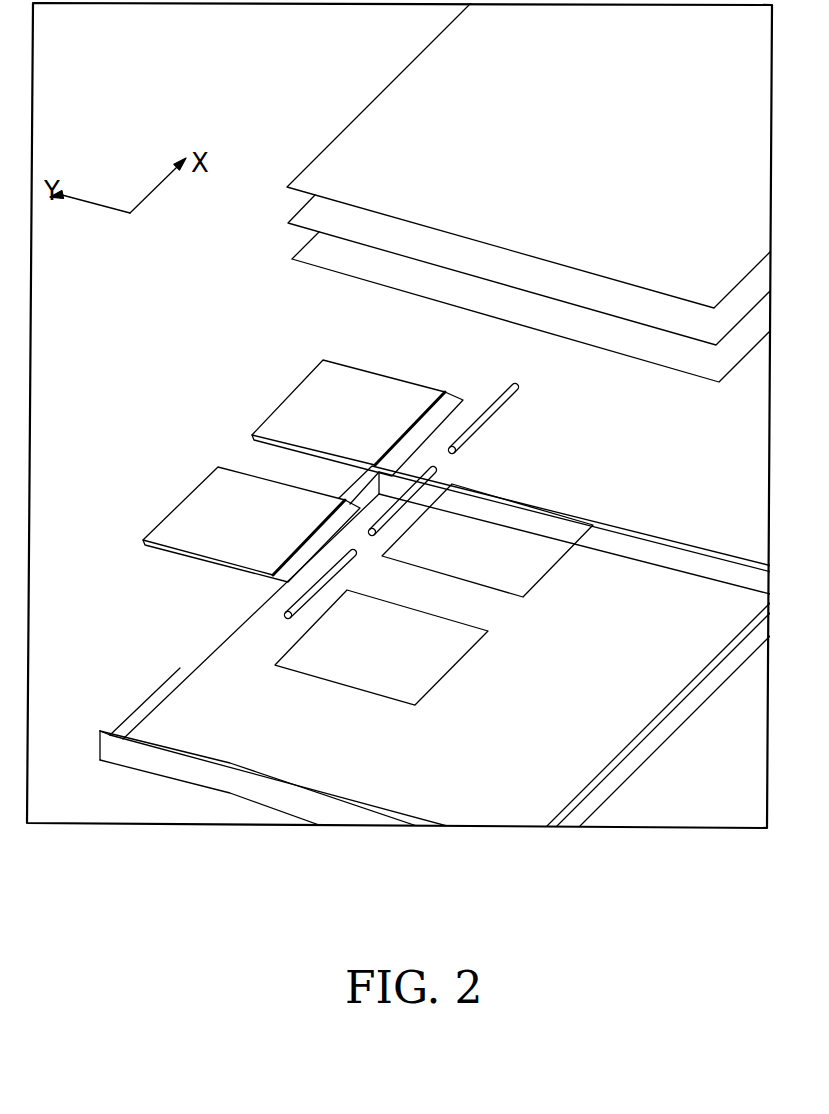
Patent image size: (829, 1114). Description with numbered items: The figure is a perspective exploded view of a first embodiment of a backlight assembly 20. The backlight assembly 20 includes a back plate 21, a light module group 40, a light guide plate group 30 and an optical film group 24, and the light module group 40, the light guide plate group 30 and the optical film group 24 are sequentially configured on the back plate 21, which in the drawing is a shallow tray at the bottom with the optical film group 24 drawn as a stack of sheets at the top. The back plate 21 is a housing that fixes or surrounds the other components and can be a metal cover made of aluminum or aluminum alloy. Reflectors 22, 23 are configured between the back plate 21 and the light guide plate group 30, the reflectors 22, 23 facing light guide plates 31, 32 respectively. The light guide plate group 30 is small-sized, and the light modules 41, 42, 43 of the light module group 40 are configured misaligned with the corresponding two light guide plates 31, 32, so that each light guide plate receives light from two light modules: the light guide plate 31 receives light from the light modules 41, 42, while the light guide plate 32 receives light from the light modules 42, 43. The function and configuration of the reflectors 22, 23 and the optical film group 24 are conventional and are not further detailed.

The backlight assembly 20 is at (185, 105).
The back plate 21 is at (173, 715).
The reflector 22 is at (435, 667).
The reflector 23 is at (540, 560).
The optical film group 24 is at (284, 181).
The light guide plate group 30 is at (298, 468).
The light guide plate 31 is at (260, 538).
The light guide plate 32 is at (366, 431).
The light module group 40 is at (463, 510).
The light module 41 is at (300, 603).
The light module 42 is at (397, 512).
The light module 43 is at (473, 433).